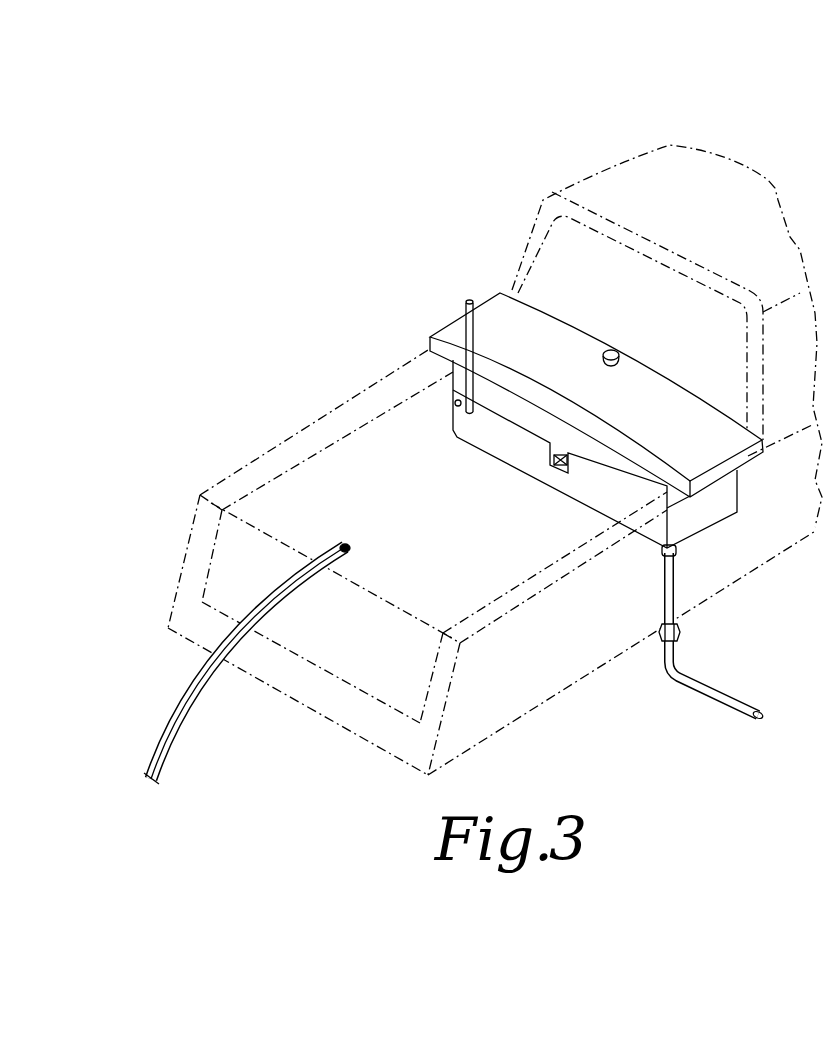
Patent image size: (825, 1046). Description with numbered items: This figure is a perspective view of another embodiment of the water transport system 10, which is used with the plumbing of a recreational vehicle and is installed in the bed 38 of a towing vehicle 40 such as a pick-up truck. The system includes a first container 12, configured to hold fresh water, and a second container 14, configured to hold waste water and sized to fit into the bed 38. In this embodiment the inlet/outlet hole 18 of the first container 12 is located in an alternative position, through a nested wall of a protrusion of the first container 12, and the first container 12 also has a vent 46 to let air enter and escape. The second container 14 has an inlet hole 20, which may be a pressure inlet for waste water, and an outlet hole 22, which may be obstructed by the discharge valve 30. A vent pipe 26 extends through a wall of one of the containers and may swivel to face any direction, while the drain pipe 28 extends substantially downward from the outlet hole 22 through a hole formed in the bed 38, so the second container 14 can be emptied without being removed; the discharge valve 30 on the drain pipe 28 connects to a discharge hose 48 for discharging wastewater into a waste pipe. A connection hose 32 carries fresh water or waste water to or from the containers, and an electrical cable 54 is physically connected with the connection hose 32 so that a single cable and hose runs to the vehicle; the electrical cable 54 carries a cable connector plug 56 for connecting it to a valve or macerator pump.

The water transport system 10 is at (428, 313).
The first container 12 is at (493, 303).
The second container 14 is at (502, 440).
The inlet/outlet hole 18 is at (551, 466).
The inlet hole 20 is at (458, 407).
The outlet hole 22 is at (677, 542).
The vent pipe 26 is at (477, 327).
The drain pipe 28 is at (669, 659).
The discharge valve 30 is at (681, 645).
The connection hose 32 is at (265, 664).
The bed 38 is at (343, 473).
The towing vehicle 40 is at (484, 562).
The vent 46 is at (619, 351).
The discharge hose 48 is at (703, 698).
The electrical cable 54 is at (195, 692).
The cable connector plug 56 is at (346, 549).